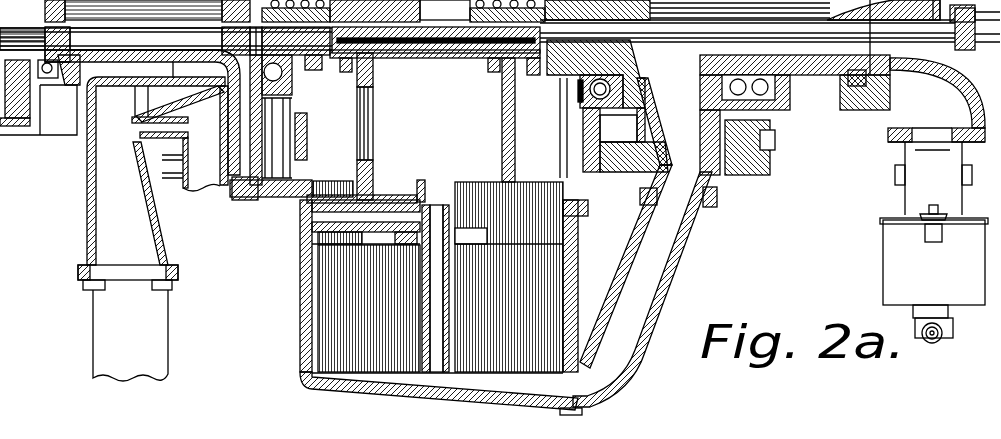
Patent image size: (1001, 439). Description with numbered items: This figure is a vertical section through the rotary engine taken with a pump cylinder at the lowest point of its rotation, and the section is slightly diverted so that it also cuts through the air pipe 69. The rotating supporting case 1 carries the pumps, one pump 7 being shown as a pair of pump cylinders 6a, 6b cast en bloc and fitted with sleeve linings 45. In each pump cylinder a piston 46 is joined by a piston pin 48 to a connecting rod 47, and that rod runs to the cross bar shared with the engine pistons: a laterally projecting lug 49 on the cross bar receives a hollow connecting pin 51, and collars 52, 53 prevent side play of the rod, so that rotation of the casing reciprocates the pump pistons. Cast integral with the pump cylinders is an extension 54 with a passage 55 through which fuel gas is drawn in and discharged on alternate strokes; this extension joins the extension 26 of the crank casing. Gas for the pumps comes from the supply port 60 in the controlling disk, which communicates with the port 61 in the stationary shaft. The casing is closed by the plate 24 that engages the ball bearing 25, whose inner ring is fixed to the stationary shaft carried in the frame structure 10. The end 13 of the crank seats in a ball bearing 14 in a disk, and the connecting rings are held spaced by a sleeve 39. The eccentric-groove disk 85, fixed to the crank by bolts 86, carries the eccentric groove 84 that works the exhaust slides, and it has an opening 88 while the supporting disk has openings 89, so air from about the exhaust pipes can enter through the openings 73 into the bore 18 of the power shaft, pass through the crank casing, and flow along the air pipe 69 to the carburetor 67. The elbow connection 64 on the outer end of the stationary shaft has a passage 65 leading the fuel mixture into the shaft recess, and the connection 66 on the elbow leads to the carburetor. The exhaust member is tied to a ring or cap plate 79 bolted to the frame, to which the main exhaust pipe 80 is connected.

The supporting case 1 is at (575, 172).
The pump cylinder 6a is at (509, 277).
The pump cylinder 6b is at (369, 308).
The pump 7 is at (318, 388).
The frame structure 10 is at (790, 88).
The end of the crank 13 is at (305, 105).
The ball bearing 14 is at (298, 128).
The bore (recess) of the shaft 18 is at (194, 40).
The plate 24 is at (590, 142).
The ball bearing 25 is at (583, 85).
The extension of the crank casing 26 is at (720, 160).
The sleeve 39 is at (445, 11).
The sleeve linings 45 is at (300, 331).
The piston 46 is at (381, 247).
The connecting rod 47 is at (373, 120).
The piston pin 48 is at (388, 198).
The laterally projecting lug 49 is at (433, 55).
The connecting pin 51 is at (488, 62).
The collar 52 is at (348, 58).
The collar 53 is at (373, 98).
The extension 54 is at (690, 241).
The passage 55 is at (633, 287).
The supply port 60 is at (688, 127).
The port 61 is at (683, 62).
The elbow connection 64 is at (893, 0).
The passage 65 is at (283, 280).
The connection 66 is at (905, 190).
The carburetor 67 is at (934, 274).
The air pipe 69 is at (775, 44).
The openings 73 is at (146, 40).
The ring or cap plate 79 is at (87, 133).
The main exhaust pipe 80 is at (130, 335).
The eccentric groove 84 is at (255, 250).
The disk 85 is at (312, 225).
The bolts 86 is at (312, 58).
The opening 88 is at (300, 90).
The openings 89 is at (250, 215).